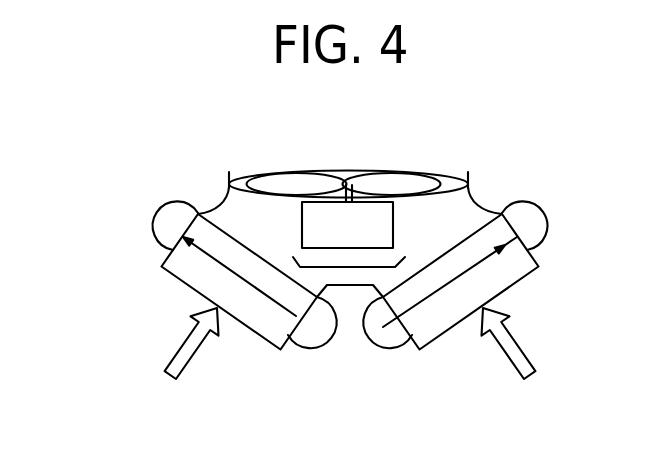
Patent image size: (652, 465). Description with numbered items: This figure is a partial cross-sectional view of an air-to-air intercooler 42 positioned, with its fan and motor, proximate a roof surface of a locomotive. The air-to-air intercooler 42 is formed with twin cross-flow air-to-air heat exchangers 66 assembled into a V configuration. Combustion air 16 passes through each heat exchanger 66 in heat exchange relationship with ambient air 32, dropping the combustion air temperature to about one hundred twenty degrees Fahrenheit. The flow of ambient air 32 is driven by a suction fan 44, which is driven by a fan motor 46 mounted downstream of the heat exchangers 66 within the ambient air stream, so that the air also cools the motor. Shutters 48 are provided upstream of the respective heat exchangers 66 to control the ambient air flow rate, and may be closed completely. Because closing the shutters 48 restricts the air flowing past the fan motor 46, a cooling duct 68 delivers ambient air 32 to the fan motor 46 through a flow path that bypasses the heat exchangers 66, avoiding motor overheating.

The combustion air 16 is at (463, 268).
The ambient air 32 is at (193, 357).
The air-to-air intercooler 42 is at (590, 157).
The fan 44 is at (383, 176).
The fan motor 46 is at (362, 236).
The shutters 48 is at (164, 268).
The air-to-air heat exchangers 66 is at (156, 212).
The cooling duct 68 is at (293, 259).